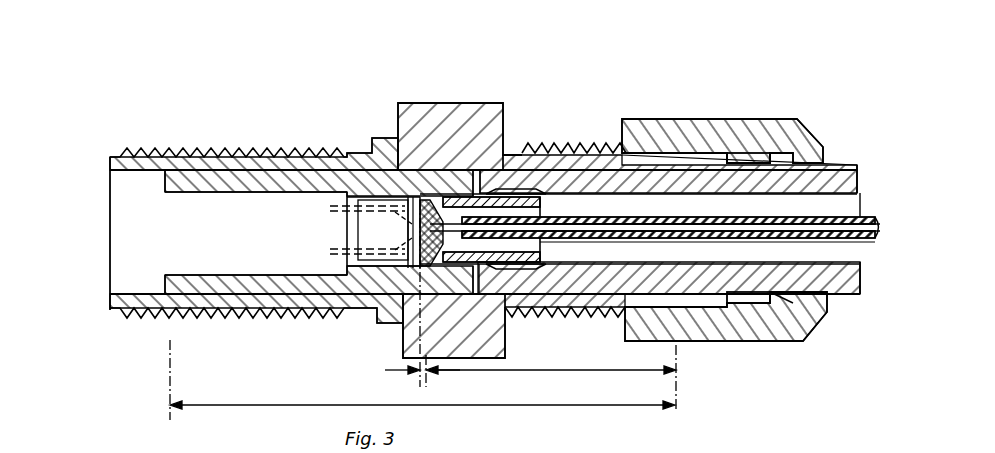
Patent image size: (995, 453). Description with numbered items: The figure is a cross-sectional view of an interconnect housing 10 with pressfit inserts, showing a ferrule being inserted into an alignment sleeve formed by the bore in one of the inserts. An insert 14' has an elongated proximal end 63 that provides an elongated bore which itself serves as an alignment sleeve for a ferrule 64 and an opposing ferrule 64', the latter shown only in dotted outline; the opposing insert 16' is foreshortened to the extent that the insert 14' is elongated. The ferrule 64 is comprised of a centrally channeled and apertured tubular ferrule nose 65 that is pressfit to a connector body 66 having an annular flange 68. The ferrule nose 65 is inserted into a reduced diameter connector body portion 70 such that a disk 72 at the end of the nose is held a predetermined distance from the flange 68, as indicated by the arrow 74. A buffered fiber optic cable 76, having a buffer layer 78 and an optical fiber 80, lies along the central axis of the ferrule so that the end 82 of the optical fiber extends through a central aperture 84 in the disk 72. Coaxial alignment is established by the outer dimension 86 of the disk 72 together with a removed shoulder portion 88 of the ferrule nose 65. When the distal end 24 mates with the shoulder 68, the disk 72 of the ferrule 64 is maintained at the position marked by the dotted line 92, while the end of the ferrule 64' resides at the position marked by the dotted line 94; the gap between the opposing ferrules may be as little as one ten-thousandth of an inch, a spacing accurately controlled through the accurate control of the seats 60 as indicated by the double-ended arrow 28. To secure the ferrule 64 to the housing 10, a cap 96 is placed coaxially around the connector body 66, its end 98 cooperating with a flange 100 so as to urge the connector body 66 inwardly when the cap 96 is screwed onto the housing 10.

The housing 10 is at (523, 42).
The insert 14' is at (291, 205).
The ferrule 64' is at (335, 177).
The outer dimension 86 is at (425, 200).
The removed shoulder portion 88 is at (470, 198).
The insert 16' is at (666, 194).
The ferrule 64 is at (722, 186).
The distal end 24 is at (678, 188).
The cap 96 is at (735, 118).
The connector body 66 is at (847, 160).
The buffered fiber optic cable 76 is at (852, 205).
The buffer layer 78 is at (724, 220).
The optical fiber 80 is at (856, 243).
The end 98 is at (786, 298).
The flange 100 is at (766, 297).
The seats 60 is at (148, 244).
The annular flange 68 is at (700, 298).
The reduced diameter connector body portion 70 is at (598, 265).
The ferrule nose 65 is at (553, 265).
The arrow 74 is at (552, 368).
The elongated proximal end 63 is at (455, 282).
The central aperture 84 is at (400, 270).
The dotted line 94 is at (413, 382).
The dotted line 92 is at (428, 382).
The double-ended arrow 28 is at (542, 404).
The disk 72 is at (405, 217).
The end of the optical fiber 82 is at (418, 235).